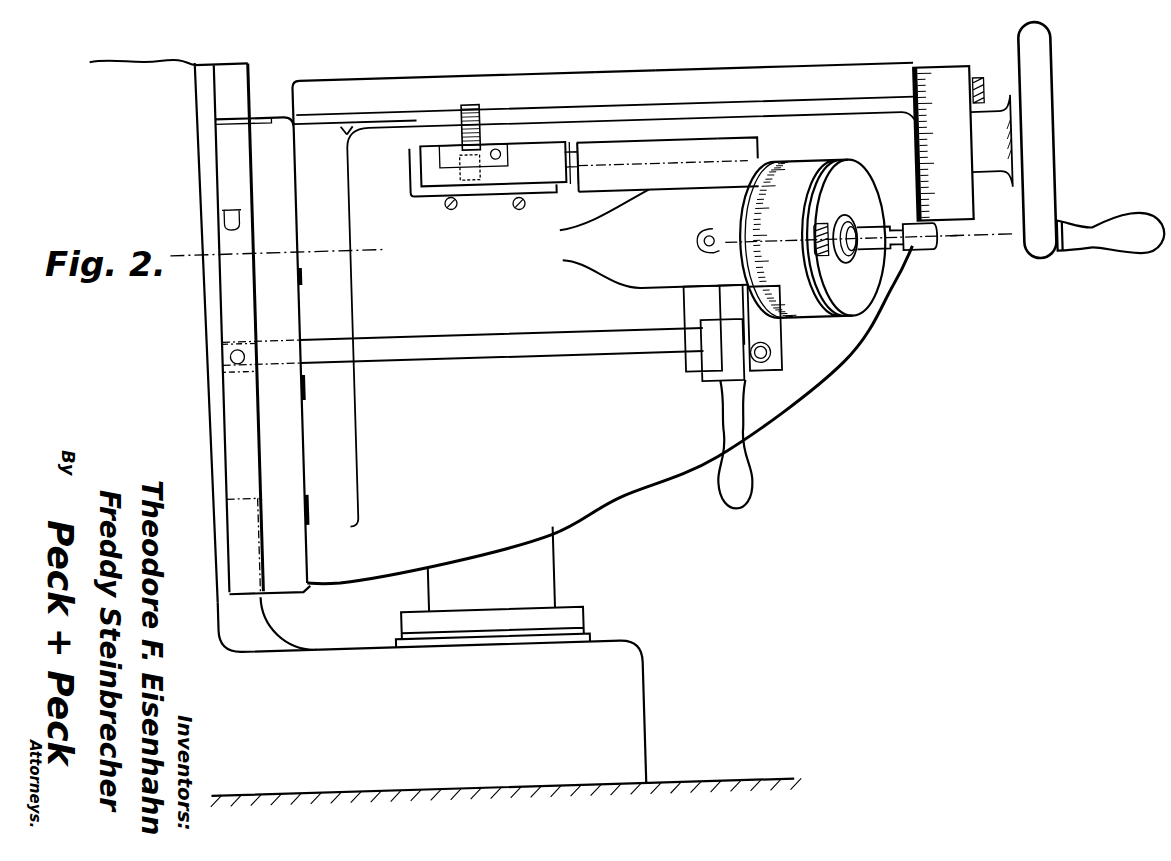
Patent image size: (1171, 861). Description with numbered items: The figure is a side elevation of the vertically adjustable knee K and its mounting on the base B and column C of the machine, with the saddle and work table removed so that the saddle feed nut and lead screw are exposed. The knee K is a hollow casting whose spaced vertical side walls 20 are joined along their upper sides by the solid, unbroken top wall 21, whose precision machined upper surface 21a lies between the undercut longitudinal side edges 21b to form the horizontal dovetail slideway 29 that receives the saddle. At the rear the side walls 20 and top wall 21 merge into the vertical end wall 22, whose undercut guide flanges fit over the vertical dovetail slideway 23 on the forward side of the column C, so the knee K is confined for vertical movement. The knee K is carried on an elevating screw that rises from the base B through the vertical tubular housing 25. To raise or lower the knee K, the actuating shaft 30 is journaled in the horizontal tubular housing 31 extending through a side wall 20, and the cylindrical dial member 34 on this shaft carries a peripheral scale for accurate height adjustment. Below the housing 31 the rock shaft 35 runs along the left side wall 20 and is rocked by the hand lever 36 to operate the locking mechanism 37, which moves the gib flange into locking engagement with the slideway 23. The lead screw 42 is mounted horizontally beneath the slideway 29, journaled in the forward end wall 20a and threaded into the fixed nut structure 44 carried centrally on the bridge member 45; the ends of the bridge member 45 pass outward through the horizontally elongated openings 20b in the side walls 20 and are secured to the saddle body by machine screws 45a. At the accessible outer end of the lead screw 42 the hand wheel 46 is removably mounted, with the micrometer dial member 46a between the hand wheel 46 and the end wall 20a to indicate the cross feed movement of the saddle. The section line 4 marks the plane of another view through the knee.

The machine column C is at (190, 116).
The slideway 23 is at (223, 94).
The end wall 22 is at (275, 130).
The slideway 29 is at (538, 94).
The top wall 21 is at (730, 84).
The upper surface 21a is at (621, 72).
The side edges 21b is at (813, 82).
The side walls 20 is at (798, 383).
The knee K is at (616, 484).
The machine screws 45a is at (475, 112).
The bridge member 45 is at (453, 157).
The nut structure 44 is at (536, 161).
The openings 20b is at (630, 140).
The lead screw 42 is at (737, 146).
The dial member 34 is at (805, 293).
The actuating shaft 30 is at (858, 258).
The forward end wall 20a is at (906, 247).
The tubular housing 31 is at (655, 270).
The rock shaft 35 is at (605, 340).
The locking mechanism 37 is at (230, 348).
The hand lever 36 is at (738, 488).
The tubular housing 25 is at (530, 587).
The base B is at (527, 732).
The micrometer dial member 46a is at (945, 76).
The hand wheel 46 is at (1038, 124).
The section line 4- 4 is at (184, 250).